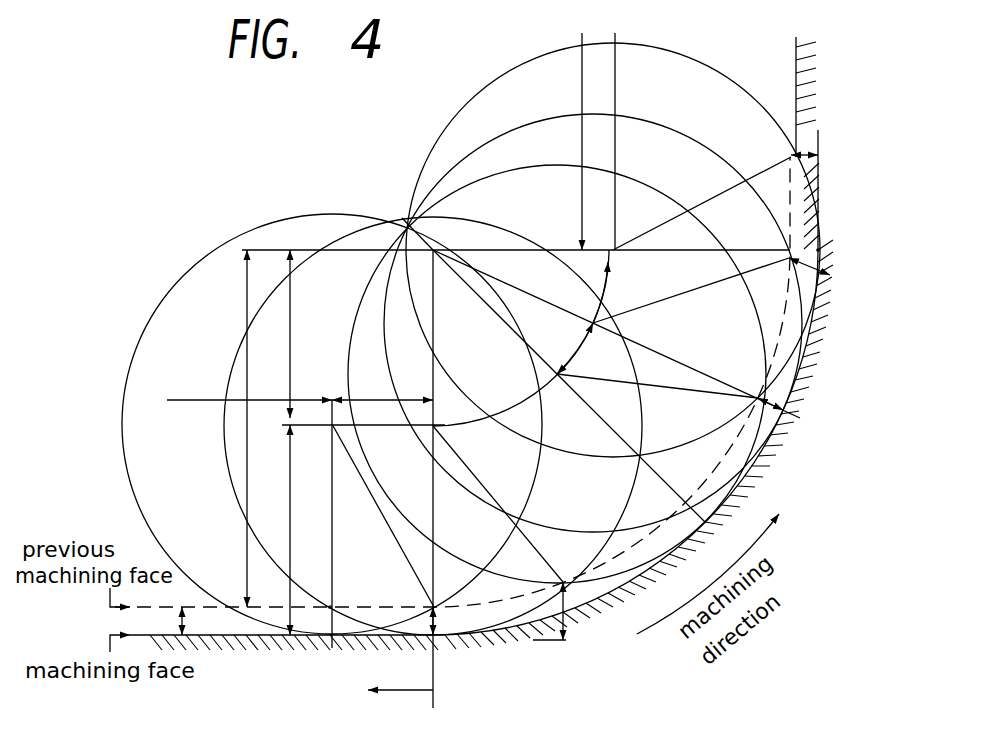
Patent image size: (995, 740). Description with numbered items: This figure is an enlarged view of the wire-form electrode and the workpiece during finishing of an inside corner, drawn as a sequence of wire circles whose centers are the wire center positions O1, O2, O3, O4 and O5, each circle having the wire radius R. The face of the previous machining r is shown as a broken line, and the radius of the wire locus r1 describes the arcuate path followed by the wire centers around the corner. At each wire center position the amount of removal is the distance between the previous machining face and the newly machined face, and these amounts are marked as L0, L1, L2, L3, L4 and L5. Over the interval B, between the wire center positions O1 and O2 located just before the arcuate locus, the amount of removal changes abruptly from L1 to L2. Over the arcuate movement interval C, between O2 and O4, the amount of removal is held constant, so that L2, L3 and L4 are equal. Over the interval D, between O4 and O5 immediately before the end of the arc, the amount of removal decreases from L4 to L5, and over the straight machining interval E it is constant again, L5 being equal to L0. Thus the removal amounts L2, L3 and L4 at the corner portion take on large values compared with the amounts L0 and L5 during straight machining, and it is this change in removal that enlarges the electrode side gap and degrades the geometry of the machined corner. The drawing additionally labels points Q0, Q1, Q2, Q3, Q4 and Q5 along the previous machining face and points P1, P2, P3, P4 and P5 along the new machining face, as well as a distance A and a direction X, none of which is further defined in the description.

The wire center position O1 is at (332, 424).
The wire center position O2 is at (433, 426).
The wire center position O3 is at (557, 374).
The wire center position O4 is at (593, 323).
The wire center position O5 is at (613, 250).
The arcuate movement interval C is at (521, 338).
The interval before end of arc D is at (580, 318).
The straight machining interval E is at (572, 141).
The cusp point on previous machining face Q0 is at (345, 598).
The cusp point on previous machining face Q1 is at (394, 515).
The cusp point on previous machining face Q2 is at (505, 504).
The cusp point on previous machining face Q3 is at (657, 383).
The cusp point on previous machining face Q4 is at (691, 278).
The cusp point on previous machining face Q5 is at (702, 195).
The tangent point on machining face P1 is at (335, 552).
The tangent point on machining face P2 is at (432, 671).
The tangent point on machining face P3 is at (577, 407).
The tangent point on machining face P4 is at (625, 335).
The tangent point on machining face P5 is at (830, 251).
The amount of removal L0 is at (167, 622).
The amount of removal L1 is at (443, 626).
The amount of removal L2 is at (561, 613).
The amount of removal L3 is at (786, 438).
The amount of removal L4 is at (823, 285).
The amount of removal L5 is at (806, 141).
The horizontal distance A is at (249, 385).
The interval before arcuate locus B is at (382, 387).
The radius of wire locus r1 is at (303, 334).
The wire radius R is at (298, 530).
The face of previous machining r is at (254, 428).
The X axis direction X is at (389, 693).